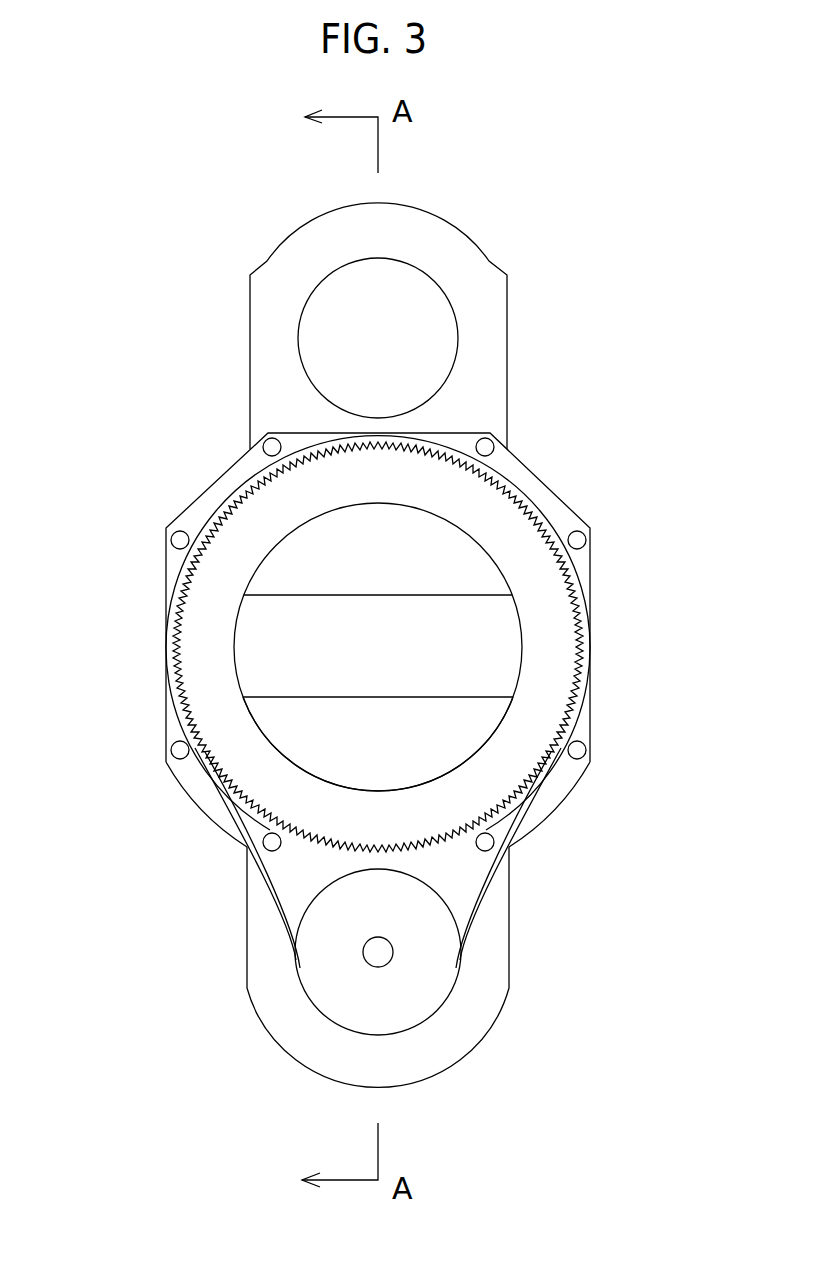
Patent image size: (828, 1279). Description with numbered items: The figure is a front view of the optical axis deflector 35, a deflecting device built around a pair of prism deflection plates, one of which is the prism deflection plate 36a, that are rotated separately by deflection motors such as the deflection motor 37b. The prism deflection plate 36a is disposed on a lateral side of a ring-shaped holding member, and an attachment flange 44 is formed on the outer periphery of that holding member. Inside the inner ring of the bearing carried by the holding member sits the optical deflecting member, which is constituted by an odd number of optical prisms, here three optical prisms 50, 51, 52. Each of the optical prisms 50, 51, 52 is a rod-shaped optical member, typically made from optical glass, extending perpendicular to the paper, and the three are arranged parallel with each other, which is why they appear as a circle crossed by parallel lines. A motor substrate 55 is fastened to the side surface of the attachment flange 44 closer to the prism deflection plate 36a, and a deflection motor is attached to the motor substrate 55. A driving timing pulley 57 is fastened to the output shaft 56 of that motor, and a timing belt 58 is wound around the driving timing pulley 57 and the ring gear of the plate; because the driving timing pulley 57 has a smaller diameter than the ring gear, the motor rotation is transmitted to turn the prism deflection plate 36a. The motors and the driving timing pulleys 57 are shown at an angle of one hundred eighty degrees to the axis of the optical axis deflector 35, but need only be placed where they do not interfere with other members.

The optical axis deflector 35 is at (208, 430).
The prism deflection plate 36a is at (204, 684).
The deflection motor 37b is at (435, 280).
The attachment flange 44 is at (578, 783).
The optical prism 50 is at (463, 562).
The optical prism 51 is at (488, 646).
The optical prism 52 is at (458, 742).
The motor substrate 55 is at (512, 950).
The output shaft 56 is at (388, 963).
The driving timing pulley 57 is at (332, 1022).
The timing belt 58 is at (277, 903).